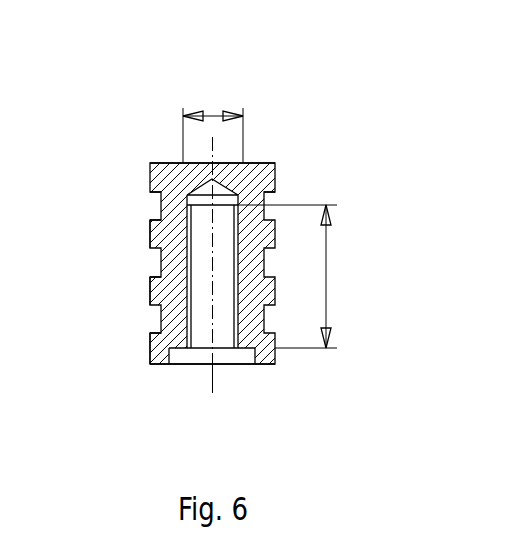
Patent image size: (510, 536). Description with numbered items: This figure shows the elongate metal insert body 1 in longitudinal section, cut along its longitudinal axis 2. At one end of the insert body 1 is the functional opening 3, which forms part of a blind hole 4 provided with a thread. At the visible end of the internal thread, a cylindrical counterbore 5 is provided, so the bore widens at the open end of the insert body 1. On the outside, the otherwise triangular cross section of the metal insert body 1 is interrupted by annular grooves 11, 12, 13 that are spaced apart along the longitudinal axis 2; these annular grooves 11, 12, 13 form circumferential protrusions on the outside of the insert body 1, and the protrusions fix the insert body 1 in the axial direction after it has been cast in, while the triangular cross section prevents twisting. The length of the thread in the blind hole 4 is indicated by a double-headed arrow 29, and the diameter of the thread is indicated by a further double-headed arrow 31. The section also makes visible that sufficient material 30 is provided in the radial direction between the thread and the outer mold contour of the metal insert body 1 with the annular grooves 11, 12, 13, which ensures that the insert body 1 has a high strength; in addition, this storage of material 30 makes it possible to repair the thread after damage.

The metal insert body 1 is at (128, 140).
The longitudinal axis 2 is at (213, 377).
The functional opening 3 is at (183, 367).
The blind hole 4 is at (185, 288).
The cylindrical counterbore 5 is at (231, 357).
The annular groove 11 is at (157, 219).
The annular groove 12 is at (155, 277).
The annular groove 13 is at (155, 333).
The double-headed arrow 29 is at (326, 289).
The material 30 is at (256, 182).
The double-headed arrow 31 is at (212, 116).